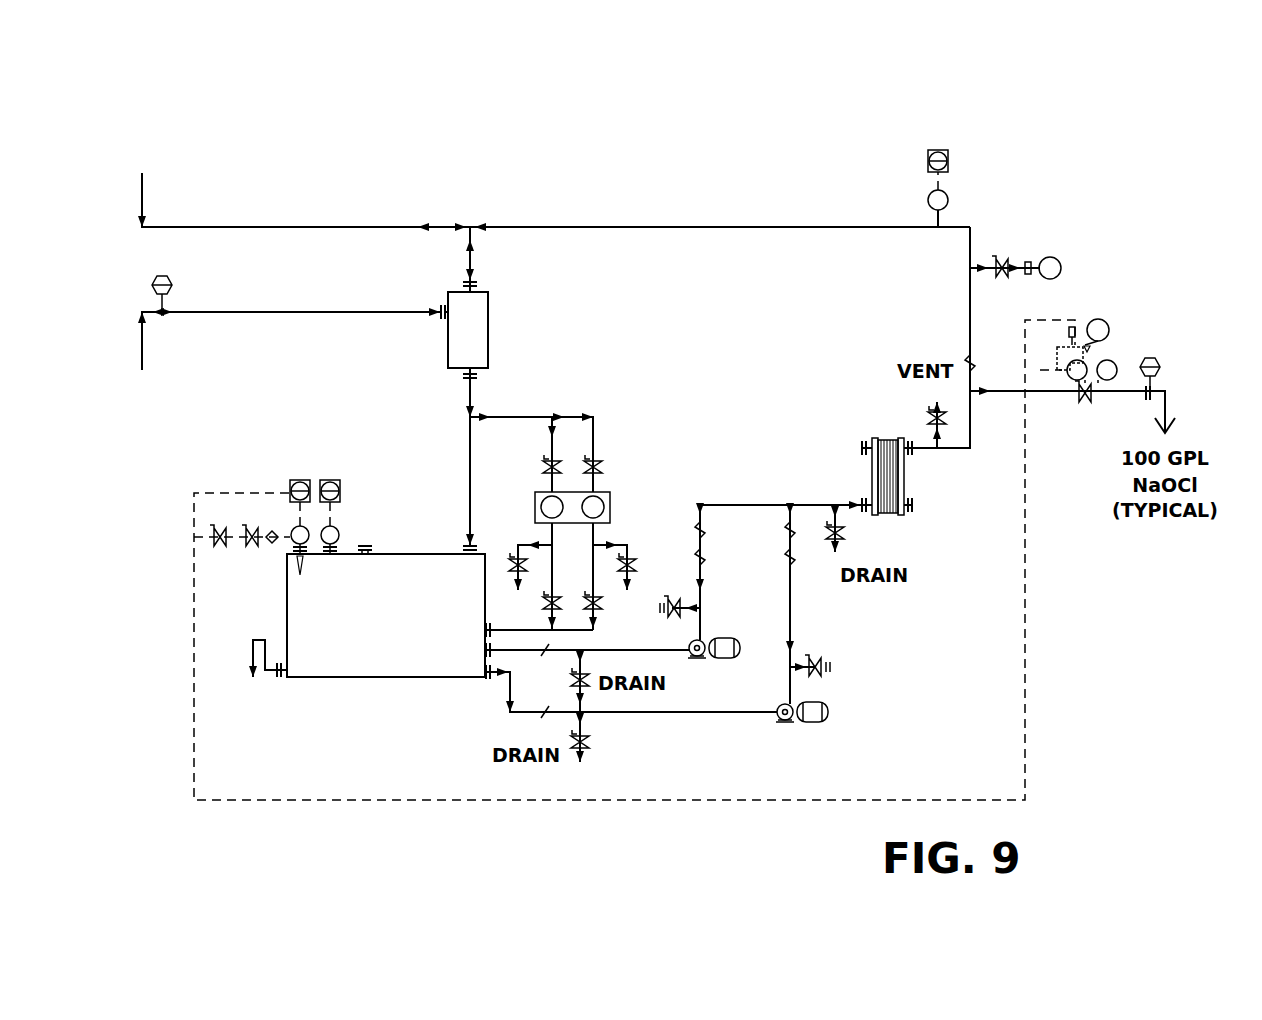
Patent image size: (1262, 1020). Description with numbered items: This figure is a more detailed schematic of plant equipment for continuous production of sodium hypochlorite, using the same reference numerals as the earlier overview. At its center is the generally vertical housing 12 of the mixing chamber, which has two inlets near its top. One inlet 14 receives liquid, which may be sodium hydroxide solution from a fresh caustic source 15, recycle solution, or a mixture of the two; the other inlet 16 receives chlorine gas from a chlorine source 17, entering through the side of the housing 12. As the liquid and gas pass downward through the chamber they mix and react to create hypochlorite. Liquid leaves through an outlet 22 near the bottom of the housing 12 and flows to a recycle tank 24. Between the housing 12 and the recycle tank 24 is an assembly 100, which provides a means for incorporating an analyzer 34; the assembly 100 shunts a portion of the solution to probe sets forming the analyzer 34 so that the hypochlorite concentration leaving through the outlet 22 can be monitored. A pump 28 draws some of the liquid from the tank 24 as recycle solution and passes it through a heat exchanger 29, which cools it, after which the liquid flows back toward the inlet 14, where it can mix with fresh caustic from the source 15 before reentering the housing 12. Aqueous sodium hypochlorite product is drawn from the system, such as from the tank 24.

The housing 12 is at (490, 312).
The inlet 14 is at (478, 282).
The fresh caustic source 15 is at (197, 170).
The inlet 16 is at (440, 322).
The chlorine source 17 is at (245, 365).
The outlet 22 is at (483, 375).
The recycle tank 24 is at (408, 678).
The pump 28 is at (742, 650).
The heat exchanger 29 is at (905, 476).
The analyzer 34 is at (610, 492).
The assembly 100 is at (470, 452).